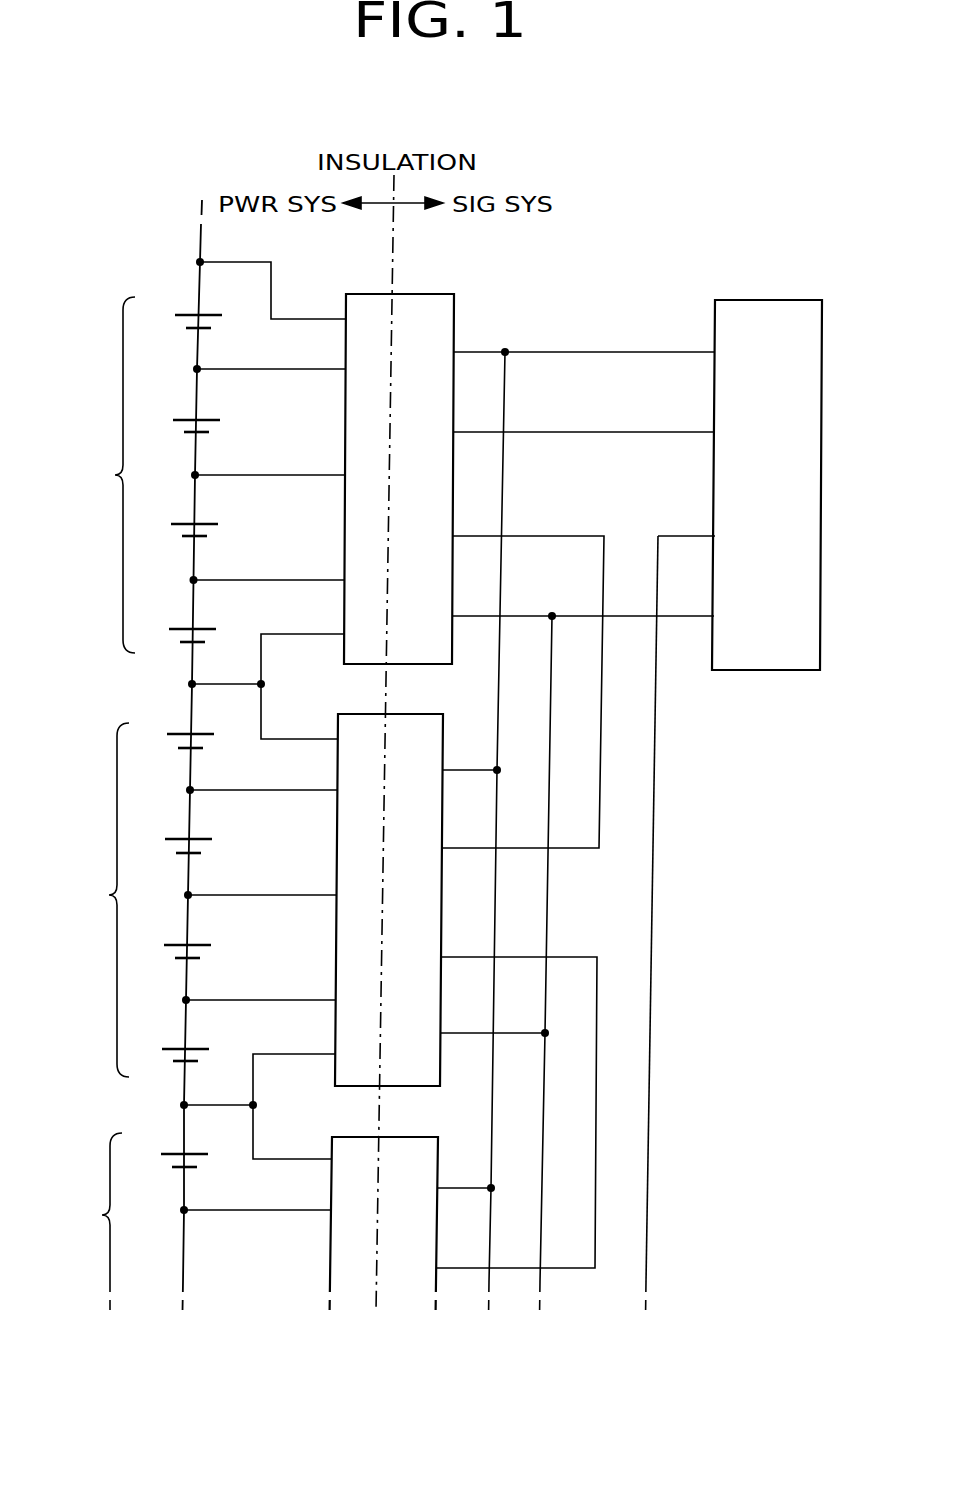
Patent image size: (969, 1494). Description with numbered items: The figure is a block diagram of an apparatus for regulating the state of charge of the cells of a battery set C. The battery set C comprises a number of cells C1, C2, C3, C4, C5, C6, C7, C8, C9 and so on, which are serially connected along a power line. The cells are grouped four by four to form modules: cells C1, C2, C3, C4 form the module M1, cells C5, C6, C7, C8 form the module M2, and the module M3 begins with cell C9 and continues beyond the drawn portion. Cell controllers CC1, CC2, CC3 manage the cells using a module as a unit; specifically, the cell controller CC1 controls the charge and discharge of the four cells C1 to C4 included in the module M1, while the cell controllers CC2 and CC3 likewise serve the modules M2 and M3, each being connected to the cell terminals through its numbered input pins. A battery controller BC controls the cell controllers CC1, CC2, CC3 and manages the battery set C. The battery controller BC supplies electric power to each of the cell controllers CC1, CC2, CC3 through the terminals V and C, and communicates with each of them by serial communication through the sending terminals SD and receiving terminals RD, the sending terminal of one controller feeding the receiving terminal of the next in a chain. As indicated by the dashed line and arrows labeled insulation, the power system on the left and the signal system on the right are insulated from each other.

The battery set C is at (173, 273).
The cell C1 is at (178, 319).
The cell C2 is at (176, 425).
The cell C3 is at (175, 530).
The cell C4 is at (174, 635).
The cell C5 is at (171, 739).
The cell C6 is at (170, 844).
The cell C7 is at (168, 949).
The cell C8 is at (167, 1055).
The cell C9 is at (165, 1160).
The module M1 is at (148, 475).
The module M2 is at (141, 900).
The module M3 is at (135, 1222).
The cell controller CC1 is at (399, 462).
The cell controller CC2 is at (389, 884).
The cell controller CC3 is at (384, 1207).
The battery controller BC is at (767, 469).